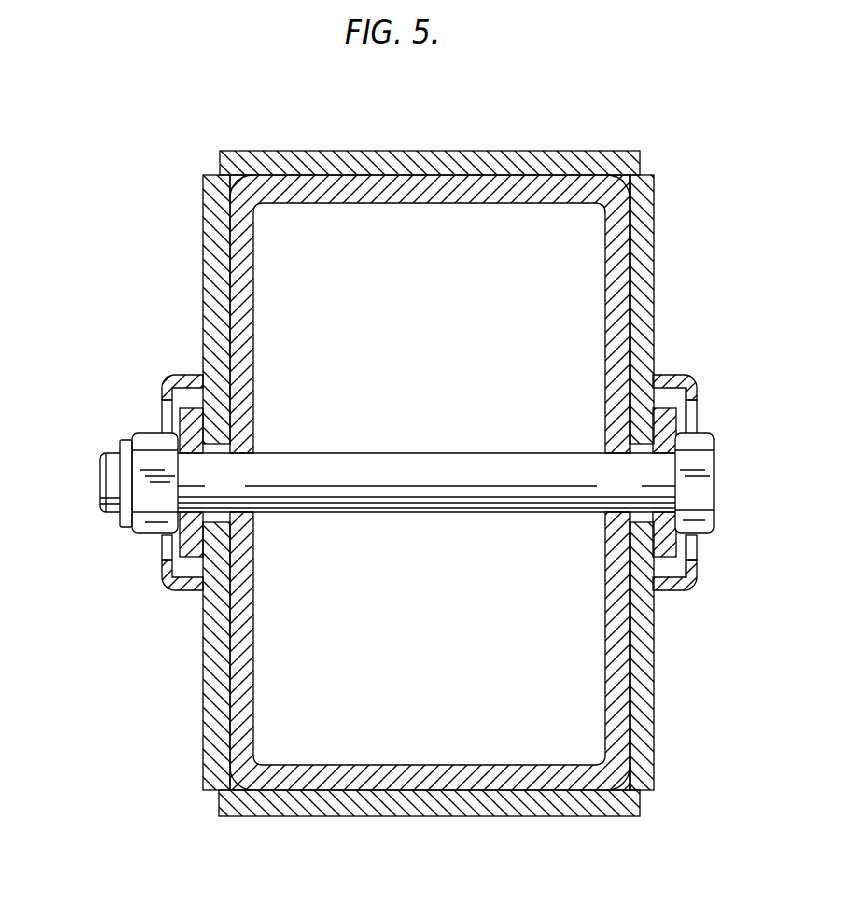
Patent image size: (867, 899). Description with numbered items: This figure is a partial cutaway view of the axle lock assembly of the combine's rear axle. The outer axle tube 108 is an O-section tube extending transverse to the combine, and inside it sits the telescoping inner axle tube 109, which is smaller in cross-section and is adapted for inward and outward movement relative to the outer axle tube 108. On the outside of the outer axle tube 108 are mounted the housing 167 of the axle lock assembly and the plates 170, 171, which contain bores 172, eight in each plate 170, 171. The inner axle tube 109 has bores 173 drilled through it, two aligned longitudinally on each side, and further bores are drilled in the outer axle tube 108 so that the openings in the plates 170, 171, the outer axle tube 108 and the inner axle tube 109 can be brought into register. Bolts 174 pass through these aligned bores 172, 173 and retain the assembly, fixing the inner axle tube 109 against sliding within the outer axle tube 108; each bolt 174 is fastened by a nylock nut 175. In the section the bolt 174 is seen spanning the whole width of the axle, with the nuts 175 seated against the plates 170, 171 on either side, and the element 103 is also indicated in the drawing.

The bolt 103 is at (620, 454).
The outer axle tube 108 is at (655, 308).
The inner axle tube 109 is at (252, 626).
The housing 167 is at (698, 380).
The plate 170 is at (162, 540).
The plate 171 is at (697, 565).
The bores 172 is at (193, 452).
The bores 173 is at (245, 512).
The bolts 174 is at (100, 482).
The nylock nuts 175 is at (145, 536).